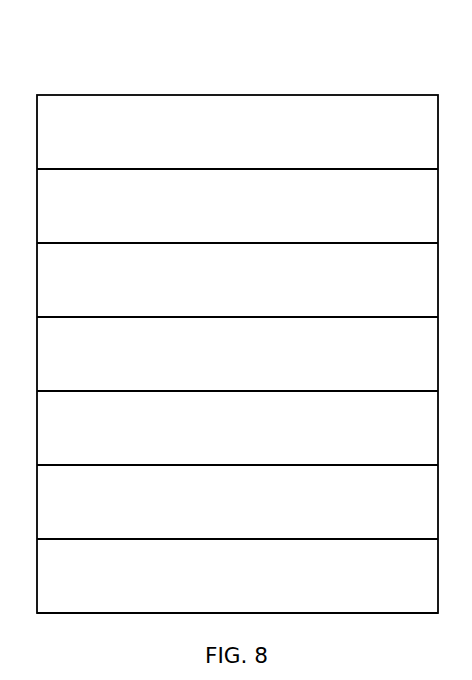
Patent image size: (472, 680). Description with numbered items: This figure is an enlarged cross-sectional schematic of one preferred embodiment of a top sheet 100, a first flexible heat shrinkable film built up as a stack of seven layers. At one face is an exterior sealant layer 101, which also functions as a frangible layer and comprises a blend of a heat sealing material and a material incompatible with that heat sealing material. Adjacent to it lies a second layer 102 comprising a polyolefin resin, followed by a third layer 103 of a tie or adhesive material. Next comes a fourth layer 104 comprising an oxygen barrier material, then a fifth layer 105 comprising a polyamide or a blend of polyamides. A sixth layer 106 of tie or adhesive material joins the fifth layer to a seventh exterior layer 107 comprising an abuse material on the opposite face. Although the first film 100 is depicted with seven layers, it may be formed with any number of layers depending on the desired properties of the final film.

The top sheet 100 is at (236, 78).
The exterior sealant layer 101 is at (237, 143).
The second layer 102 is at (237, 217).
The third layer 103 is at (237, 291).
The fourth layer 104 is at (237, 365).
The fifth layer 105 is at (237, 439).
The sixth layer 106 is at (237, 513).
The seventh exterior layer 107 is at (237, 587).